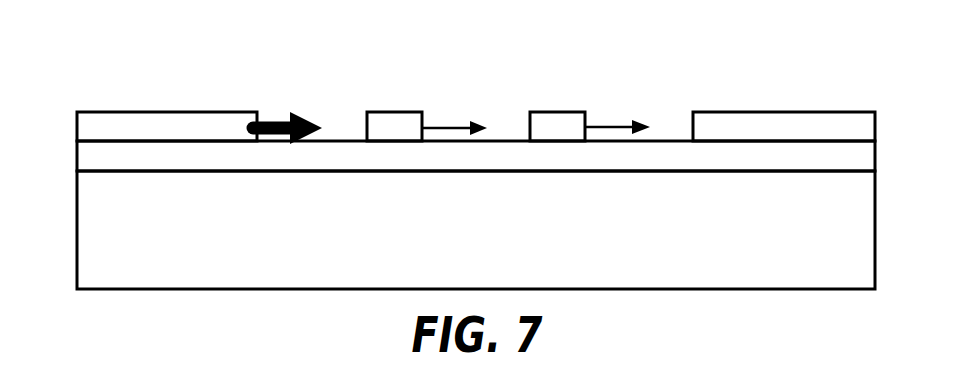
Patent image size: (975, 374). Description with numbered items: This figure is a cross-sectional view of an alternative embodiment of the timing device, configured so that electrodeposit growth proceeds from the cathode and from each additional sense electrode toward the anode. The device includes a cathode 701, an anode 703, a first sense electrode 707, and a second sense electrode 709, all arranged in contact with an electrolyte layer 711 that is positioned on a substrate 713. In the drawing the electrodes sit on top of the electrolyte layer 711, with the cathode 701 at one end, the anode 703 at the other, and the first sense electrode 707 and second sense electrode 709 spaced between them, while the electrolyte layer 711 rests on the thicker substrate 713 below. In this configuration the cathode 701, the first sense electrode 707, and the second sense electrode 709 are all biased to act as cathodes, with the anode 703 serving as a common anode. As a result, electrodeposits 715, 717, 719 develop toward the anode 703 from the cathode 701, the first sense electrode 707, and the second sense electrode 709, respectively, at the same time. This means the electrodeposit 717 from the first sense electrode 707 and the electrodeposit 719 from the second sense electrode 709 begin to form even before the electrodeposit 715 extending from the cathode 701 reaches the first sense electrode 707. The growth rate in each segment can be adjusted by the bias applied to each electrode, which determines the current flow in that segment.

The cathode 701 is at (112, 110).
The anode 703 is at (748, 111).
The first sense electrode 707 is at (385, 111).
The second sense electrode 709 is at (557, 111).
The electrolyte layer 711 is at (877, 160).
The substrate 713 is at (76, 231).
The electrodeposit 715 is at (298, 124).
The electrodeposit 717 is at (460, 125).
The electrodeposit 719 is at (619, 126).